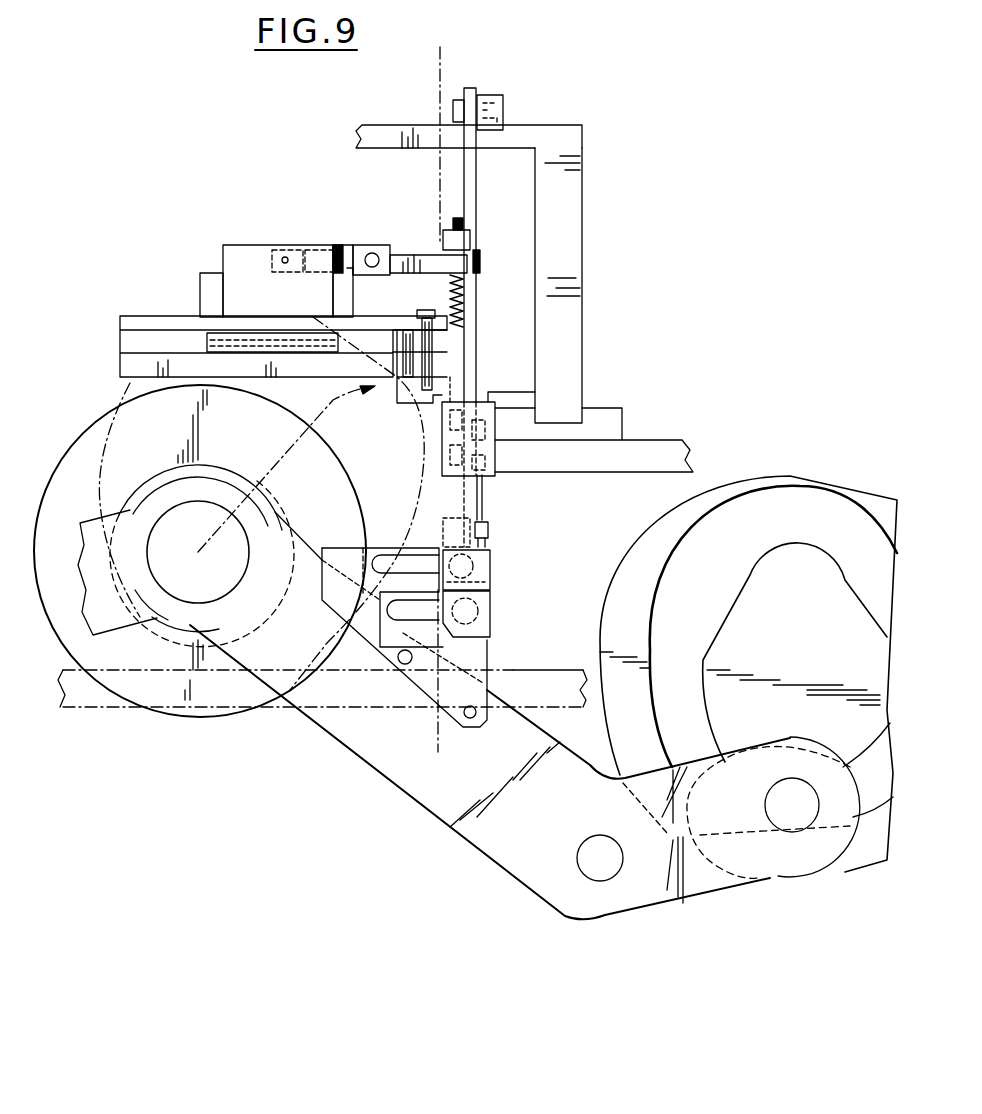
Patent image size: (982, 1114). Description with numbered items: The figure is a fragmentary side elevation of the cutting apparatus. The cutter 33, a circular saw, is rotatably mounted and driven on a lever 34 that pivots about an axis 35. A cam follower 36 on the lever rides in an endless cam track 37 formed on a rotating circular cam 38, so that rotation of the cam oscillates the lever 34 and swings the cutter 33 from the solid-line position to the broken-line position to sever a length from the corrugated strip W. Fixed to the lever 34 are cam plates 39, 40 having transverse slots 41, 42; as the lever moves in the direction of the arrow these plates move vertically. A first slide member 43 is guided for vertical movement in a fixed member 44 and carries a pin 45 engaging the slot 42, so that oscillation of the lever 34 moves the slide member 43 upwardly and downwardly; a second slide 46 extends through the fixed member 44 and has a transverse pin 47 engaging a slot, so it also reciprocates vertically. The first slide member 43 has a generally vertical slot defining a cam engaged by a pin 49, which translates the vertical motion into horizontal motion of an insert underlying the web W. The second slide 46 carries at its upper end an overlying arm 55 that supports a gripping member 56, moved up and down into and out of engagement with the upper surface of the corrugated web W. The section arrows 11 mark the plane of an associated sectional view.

The section line 11- 11 is at (434, 71).
The cutter 33 is at (225, 718).
The lever 34 is at (483, 830).
The axis 35 is at (593, 850).
The cam follower 36 is at (782, 808).
The endless cam track 37 is at (738, 612).
The cam member 38 is at (820, 674).
The cam plate 39 is at (487, 656).
The cam plate 40 is at (345, 560).
The transverse slot 41 is at (408, 618).
The transverse slot 42 is at (386, 558).
The first slide member 43 is at (477, 193).
The fixed member 44 is at (497, 433).
The pin 45 is at (492, 608).
The second slide 46 is at (448, 291).
The transverse pin 47 is at (493, 559).
The pin 49 is at (470, 362).
The overlying arm 55 is at (404, 258).
The gripping member 56 is at (233, 287).
The corrugated strip W is at (310, 353).